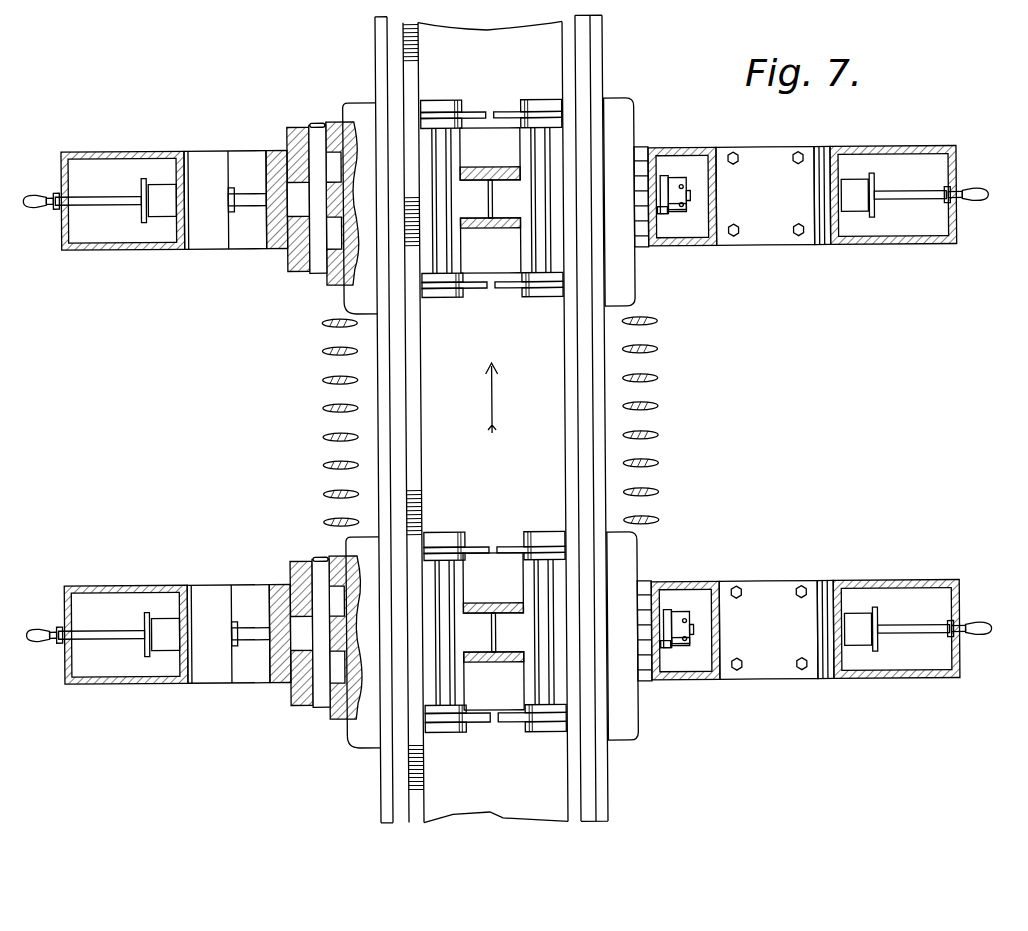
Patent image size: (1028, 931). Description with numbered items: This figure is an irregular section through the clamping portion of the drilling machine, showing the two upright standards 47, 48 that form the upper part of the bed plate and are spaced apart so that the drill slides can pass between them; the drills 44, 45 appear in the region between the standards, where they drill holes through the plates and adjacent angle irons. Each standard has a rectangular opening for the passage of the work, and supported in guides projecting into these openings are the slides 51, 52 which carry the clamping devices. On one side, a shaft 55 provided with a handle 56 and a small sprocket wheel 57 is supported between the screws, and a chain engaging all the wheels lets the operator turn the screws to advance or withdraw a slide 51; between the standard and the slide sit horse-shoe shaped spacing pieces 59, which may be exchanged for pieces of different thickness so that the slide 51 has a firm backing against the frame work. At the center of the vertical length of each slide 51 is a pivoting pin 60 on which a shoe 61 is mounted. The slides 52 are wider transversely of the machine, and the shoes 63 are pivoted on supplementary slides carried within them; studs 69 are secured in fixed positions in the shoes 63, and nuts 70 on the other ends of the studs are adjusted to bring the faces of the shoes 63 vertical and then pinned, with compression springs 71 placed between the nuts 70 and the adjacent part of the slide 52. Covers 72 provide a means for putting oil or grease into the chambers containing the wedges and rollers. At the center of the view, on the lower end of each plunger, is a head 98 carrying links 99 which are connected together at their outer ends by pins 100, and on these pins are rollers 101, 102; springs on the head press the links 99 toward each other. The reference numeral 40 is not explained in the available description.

The frame rails 40 is at (491, 419).
The drill 44 is at (660, 464).
The drill 45 is at (323, 406).
The upright standard 47 is at (92, 683).
The upright standard 48 is at (130, 250).
The slide 51 is at (278, 149).
The slide 52 is at (678, 150).
The shaft 55 is at (99, 194).
The handle 56 is at (32, 191).
The small sprocket wheel 57 is at (148, 178).
The spacing piece 59 is at (213, 234).
The pivoting pin 60 is at (318, 268).
The shoe 61 is at (343, 102).
The shoe 63 is at (637, 298).
The stud 69 is at (692, 198).
The nut 70 is at (690, 212).
The compression spring 71 is at (667, 222).
The cover 72 is at (782, 242).
The head 98 is at (492, 190).
The link 99 is at (509, 113).
The pin 100 is at (533, 158).
The roller 101 is at (533, 270).
The roller 102 is at (545, 100).